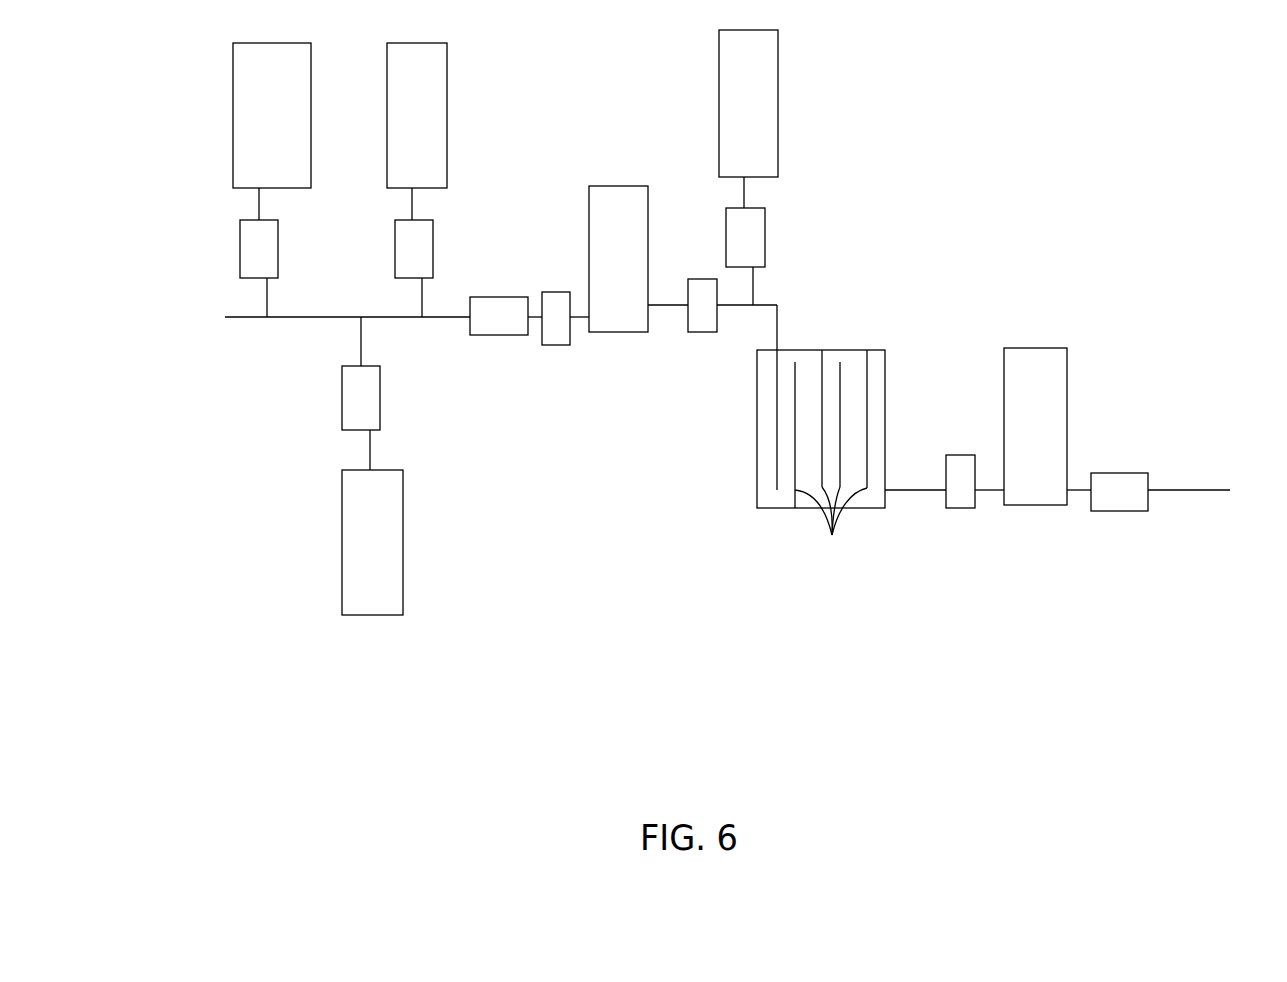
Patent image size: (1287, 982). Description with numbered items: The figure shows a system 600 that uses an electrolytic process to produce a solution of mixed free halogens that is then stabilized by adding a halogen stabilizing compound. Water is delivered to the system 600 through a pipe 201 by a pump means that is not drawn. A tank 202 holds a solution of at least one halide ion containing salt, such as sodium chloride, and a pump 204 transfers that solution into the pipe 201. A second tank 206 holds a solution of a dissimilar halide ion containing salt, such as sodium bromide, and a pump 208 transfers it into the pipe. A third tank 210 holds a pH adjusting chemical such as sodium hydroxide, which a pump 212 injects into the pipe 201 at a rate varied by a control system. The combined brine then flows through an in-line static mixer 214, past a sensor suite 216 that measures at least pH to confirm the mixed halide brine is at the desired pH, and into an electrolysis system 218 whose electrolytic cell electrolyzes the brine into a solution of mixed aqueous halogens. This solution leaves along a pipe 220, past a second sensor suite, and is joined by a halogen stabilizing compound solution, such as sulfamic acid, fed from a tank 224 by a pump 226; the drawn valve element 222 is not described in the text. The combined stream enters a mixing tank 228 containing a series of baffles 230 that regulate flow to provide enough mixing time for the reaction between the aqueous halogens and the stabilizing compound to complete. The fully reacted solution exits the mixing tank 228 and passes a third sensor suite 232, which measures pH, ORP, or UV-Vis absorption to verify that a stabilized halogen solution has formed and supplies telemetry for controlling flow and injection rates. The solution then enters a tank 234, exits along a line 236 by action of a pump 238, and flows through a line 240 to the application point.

The system 600 is at (1018, 66).
The pipe 201 is at (228, 320).
The tank 202 is at (233, 80).
The pump 204 is at (240, 238).
The tank 206 is at (342, 520).
The pump 208 is at (342, 397).
The tank 210 is at (447, 72).
The pump 212 is at (433, 232).
The in-line static mixer 214 is at (490, 335).
The sensor suite 216 is at (555, 345).
The electrolysis system 218 is at (620, 186).
The pipe 220 is at (664, 307).
The valve 222 is at (705, 279).
The tank 224 is at (778, 70).
The pump 226 is at (765, 228).
The mixing tank 228 is at (757, 405).
The baffles 230 is at (831, 528).
The third sensor suite 232 is at (960, 455).
The tank 234 is at (1028, 348).
The line 236 is at (1083, 490).
The pump 238 is at (1120, 473).
The line 240 is at (1170, 490).